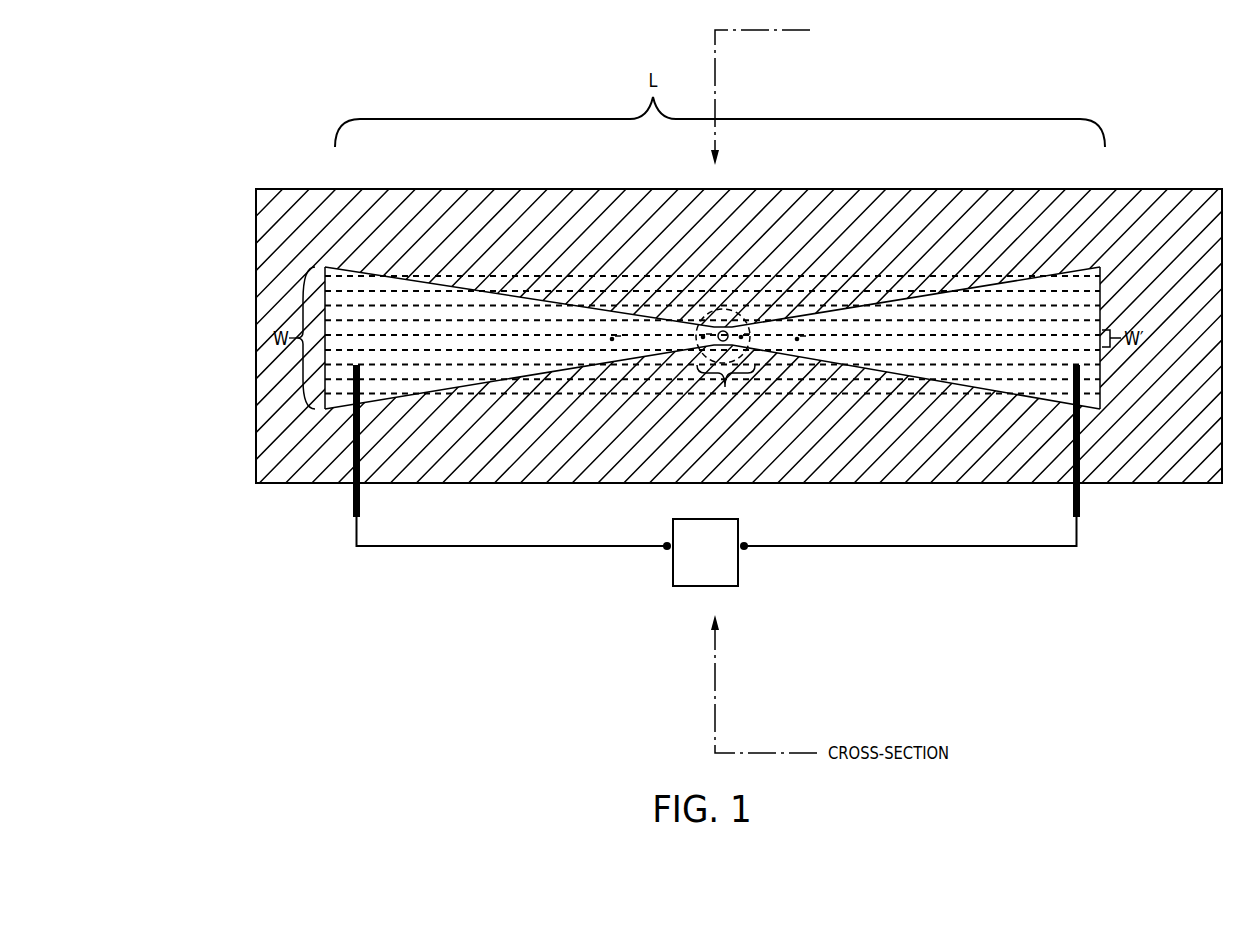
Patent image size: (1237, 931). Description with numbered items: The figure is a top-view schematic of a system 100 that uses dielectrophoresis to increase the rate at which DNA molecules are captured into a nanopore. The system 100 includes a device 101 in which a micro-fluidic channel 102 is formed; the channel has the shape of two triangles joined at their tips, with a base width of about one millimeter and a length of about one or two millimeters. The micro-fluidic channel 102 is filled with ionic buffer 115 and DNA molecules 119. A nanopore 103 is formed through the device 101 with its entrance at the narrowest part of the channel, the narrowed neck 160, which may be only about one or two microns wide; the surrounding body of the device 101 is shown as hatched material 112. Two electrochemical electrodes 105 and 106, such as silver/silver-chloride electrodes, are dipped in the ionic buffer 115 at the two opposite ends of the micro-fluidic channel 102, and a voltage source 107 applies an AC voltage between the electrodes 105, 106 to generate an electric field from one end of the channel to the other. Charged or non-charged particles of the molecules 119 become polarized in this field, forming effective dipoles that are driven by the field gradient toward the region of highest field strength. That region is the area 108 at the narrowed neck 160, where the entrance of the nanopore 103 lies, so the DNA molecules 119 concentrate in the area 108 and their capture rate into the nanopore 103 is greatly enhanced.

The system 100 is at (1042, 87).
The device 101 is at (250, 439).
The micro-fluidic channel 102 is at (377, 290).
The nanopore 103 is at (718, 330).
The electrochemical electrode 105 is at (363, 438).
The electrochemical electrode 106 is at (1078, 437).
The voltage source 107 is at (694, 560).
The area 108 is at (750, 303).
The substrate material 112 is at (281, 203).
The ionic buffer 115 is at (430, 361).
The DNA molecules 119 is at (604, 321).
The narrowed neck 160 is at (726, 397).